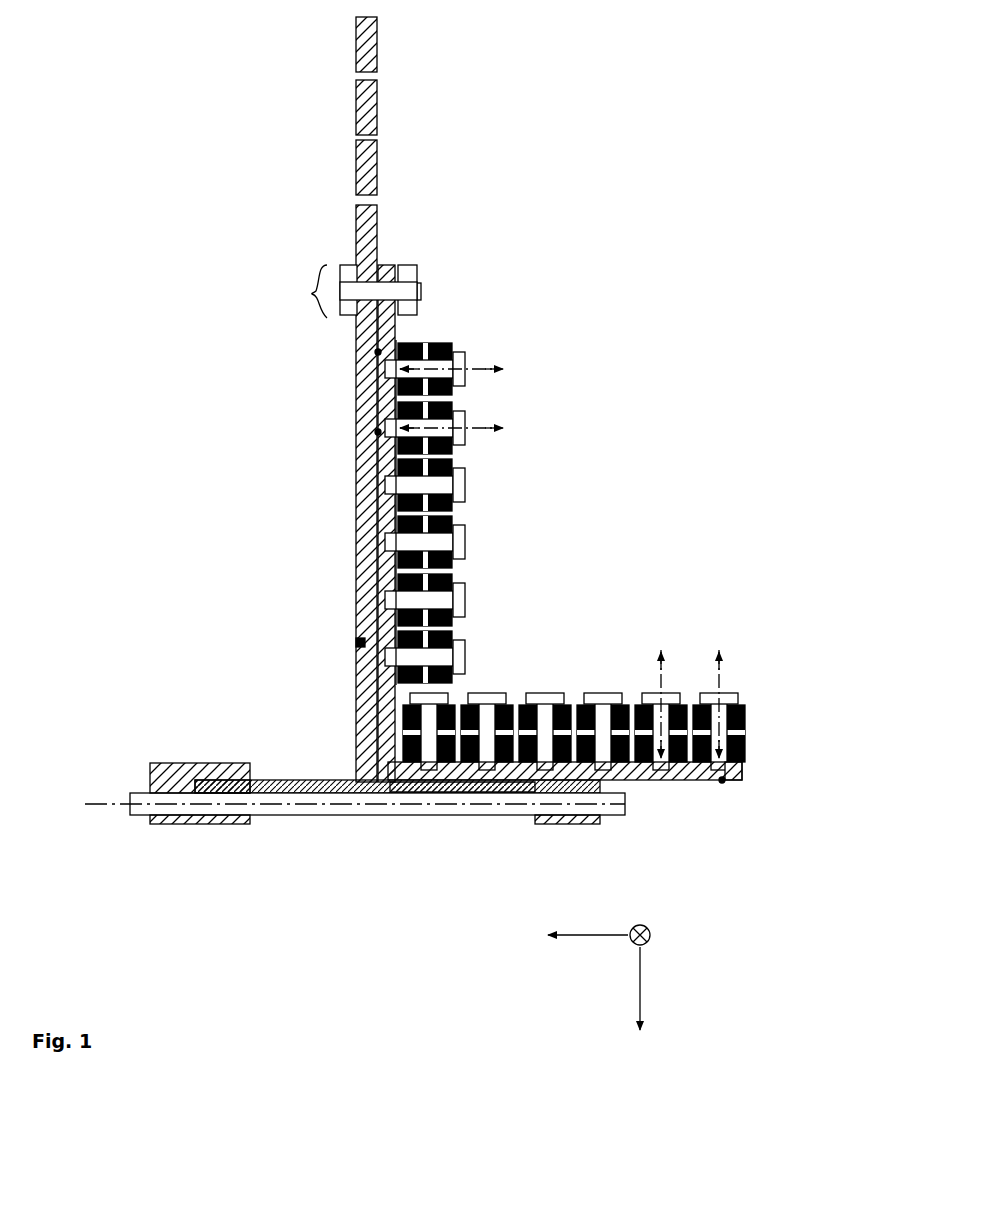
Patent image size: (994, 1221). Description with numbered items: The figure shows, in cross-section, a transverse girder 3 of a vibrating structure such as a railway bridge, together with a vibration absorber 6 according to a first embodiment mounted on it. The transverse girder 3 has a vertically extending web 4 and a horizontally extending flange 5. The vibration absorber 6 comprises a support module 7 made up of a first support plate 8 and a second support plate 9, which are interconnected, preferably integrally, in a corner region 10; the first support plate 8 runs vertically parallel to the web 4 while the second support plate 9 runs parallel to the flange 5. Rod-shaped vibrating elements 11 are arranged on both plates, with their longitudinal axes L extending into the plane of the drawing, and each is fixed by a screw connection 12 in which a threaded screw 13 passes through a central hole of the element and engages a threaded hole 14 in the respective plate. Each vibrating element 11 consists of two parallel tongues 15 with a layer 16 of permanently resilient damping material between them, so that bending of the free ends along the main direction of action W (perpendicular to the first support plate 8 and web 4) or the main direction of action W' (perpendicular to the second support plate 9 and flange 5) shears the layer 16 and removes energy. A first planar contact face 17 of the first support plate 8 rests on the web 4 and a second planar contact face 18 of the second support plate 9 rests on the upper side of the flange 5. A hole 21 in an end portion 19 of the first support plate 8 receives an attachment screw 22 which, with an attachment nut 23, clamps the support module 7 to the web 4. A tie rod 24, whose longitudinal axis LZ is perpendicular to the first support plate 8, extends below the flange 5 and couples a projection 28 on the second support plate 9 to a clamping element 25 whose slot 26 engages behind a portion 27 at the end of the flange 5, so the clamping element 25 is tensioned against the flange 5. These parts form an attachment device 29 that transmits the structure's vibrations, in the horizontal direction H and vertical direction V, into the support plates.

The transverse girder 3 is at (372, 180).
The web 4 is at (366, 578).
The flange 5 is at (306, 780).
The vibration absorber 6 is at (598, 490).
The support module 7 is at (686, 786).
The first support plate 8 is at (372, 522).
The second support plate 9 is at (645, 782).
The corner region 10 is at (378, 800).
The vibrating element 11 is at (415, 338).
The screw connection 12 is at (385, 393).
The threaded screw 13 is at (462, 356).
The threaded hole 14 is at (375, 352).
The tongue 15 is at (430, 341).
The layer of damping material 16 is at (452, 340).
The first planar contact face 17 is at (356, 643).
The second planar contact face 18 is at (470, 790).
The end portion 19 is at (339, 236).
The hole 21 is at (388, 283).
The attachment screw 22 is at (340, 265).
The attachment nut 23 is at (408, 268).
The tie rod 24 is at (292, 817).
The clamping element 25 is at (181, 763).
The slot 26 is at (232, 778).
The portion 27 is at (255, 836).
The projection 28 is at (536, 830).
The attachment device 29 is at (128, 743).
The main direction of action W is at (475, 403).
The main direction of action W' is at (712, 679).
The longitudinal axis of the tie rod LZ is at (105, 806).
The horizontal direction H is at (588, 953).
The vertical direction V is at (655, 993).
The longitudinal axis L is at (651, 937).